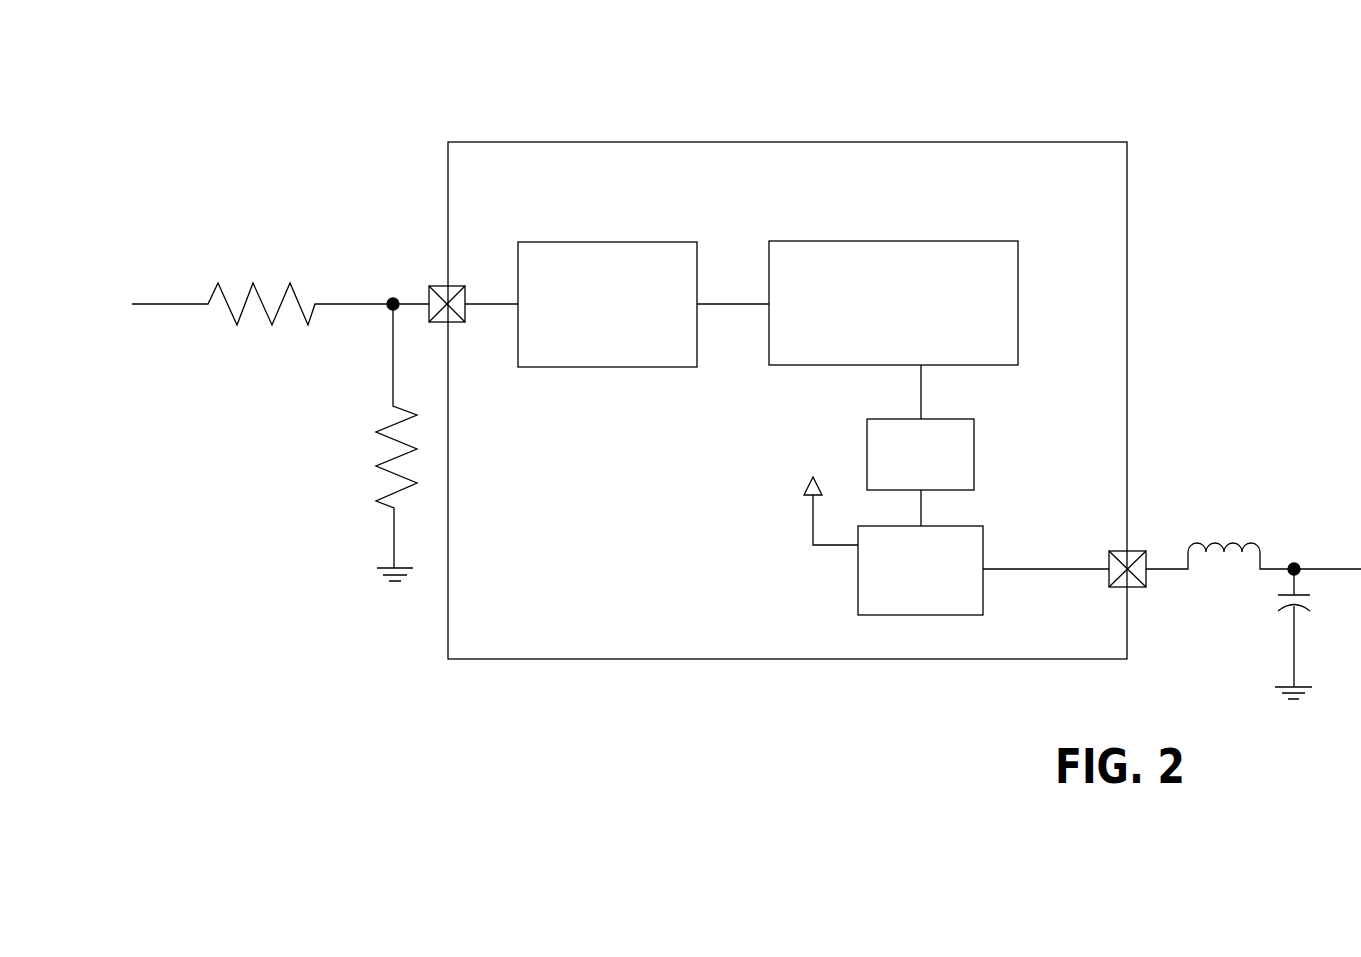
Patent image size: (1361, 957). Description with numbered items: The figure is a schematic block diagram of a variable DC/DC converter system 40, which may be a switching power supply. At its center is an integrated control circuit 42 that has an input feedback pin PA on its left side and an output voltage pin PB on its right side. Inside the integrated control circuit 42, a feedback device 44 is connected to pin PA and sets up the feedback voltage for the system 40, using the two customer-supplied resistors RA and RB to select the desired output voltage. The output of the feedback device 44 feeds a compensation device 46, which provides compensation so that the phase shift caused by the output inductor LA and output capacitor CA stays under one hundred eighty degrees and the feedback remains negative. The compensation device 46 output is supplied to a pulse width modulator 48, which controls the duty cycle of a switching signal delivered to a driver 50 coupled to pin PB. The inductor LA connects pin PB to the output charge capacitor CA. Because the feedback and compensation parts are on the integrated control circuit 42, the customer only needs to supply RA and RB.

The variable DC/DC converter system 40 is at (1129, 45).
The integrated control circuit 42 is at (964, 142).
The feedback device 44 is at (610, 242).
The compensation device 46 is at (914, 241).
The pulse width modulator 48 is at (957, 419).
The driver 50 is at (949, 526).